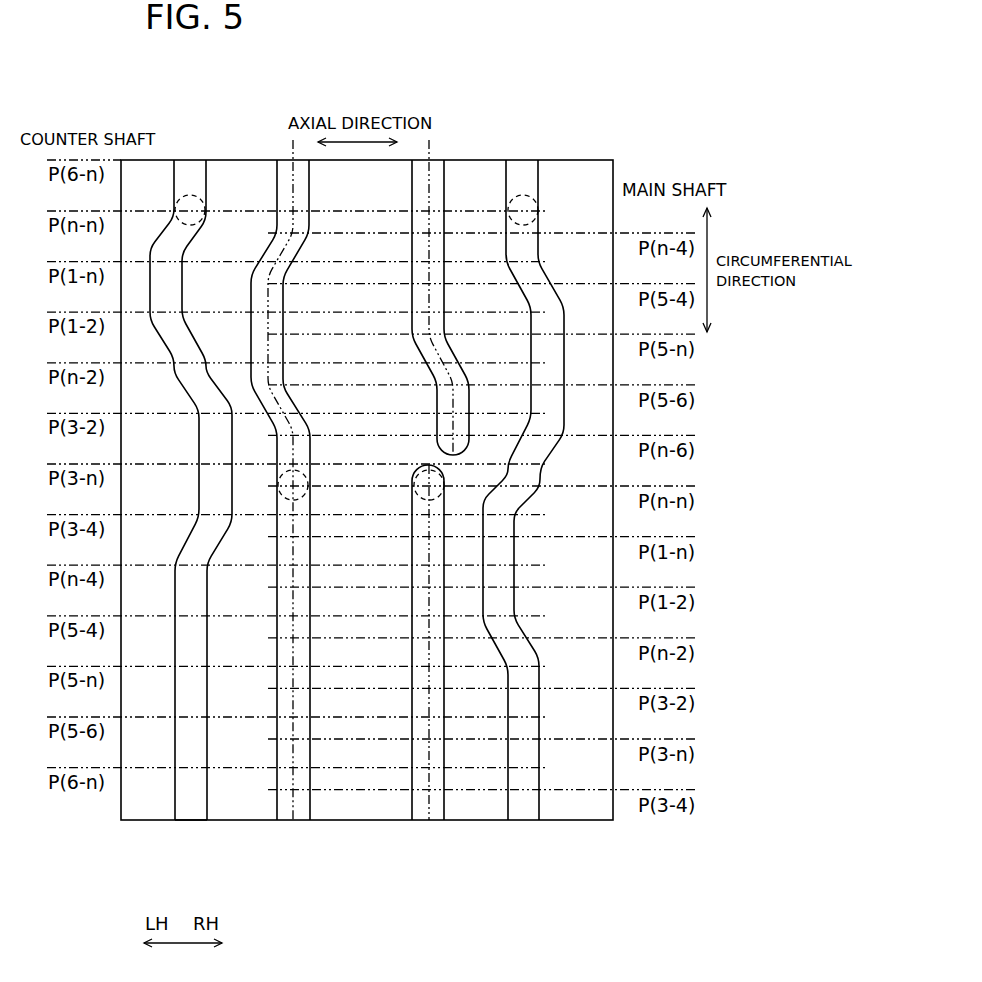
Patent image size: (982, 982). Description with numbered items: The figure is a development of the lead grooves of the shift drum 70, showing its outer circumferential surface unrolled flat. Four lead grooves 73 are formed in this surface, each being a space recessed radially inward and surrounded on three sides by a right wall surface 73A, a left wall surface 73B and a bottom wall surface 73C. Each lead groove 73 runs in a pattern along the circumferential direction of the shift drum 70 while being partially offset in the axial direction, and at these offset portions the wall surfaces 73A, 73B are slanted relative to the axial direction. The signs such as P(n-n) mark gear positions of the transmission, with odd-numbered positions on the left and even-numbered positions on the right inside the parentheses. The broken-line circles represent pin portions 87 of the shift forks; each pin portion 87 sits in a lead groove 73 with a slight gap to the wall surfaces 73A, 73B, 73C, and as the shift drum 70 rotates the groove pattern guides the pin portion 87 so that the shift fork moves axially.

The shift drum 70 is at (558, 157).
The lead groove 73 is at (192, 810).
The right wall surface 73A is at (208, 678).
The left wall surface 73B is at (178, 678).
The bottom wall surface 73C is at (190, 680).
The pin portion 87 is at (190, 202).